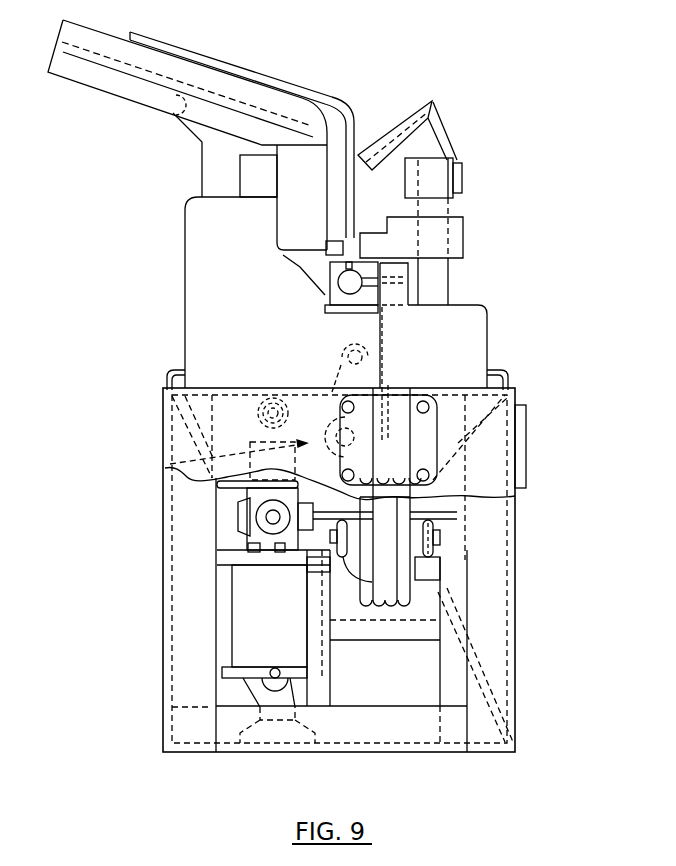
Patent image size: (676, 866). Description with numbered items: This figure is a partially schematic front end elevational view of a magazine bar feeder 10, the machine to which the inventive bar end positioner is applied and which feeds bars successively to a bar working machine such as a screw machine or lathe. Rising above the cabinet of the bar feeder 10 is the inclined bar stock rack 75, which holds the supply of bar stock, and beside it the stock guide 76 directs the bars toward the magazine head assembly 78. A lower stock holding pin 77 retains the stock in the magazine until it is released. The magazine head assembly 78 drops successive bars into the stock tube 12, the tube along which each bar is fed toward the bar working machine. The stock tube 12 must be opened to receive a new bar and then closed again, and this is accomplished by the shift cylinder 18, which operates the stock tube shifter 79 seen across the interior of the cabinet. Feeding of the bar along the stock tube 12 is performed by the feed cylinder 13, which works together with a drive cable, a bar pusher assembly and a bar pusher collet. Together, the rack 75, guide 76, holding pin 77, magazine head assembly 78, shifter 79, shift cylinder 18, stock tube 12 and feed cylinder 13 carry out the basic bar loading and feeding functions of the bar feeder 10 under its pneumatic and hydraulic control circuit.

The magazine bar feeder 10 is at (486, 117).
The stock tube 12 is at (337, 283).
The feed cylinder 13 is at (247, 543).
The shift cylinder 18 is at (232, 607).
The bar stock rack 75 is at (120, 95).
The stock guide 76 is at (307, 90).
The lower stock holding pin 77 is at (343, 249).
The magazine head assembly 78 is at (185, 345).
The stock tube shifter 79 is at (167, 468).